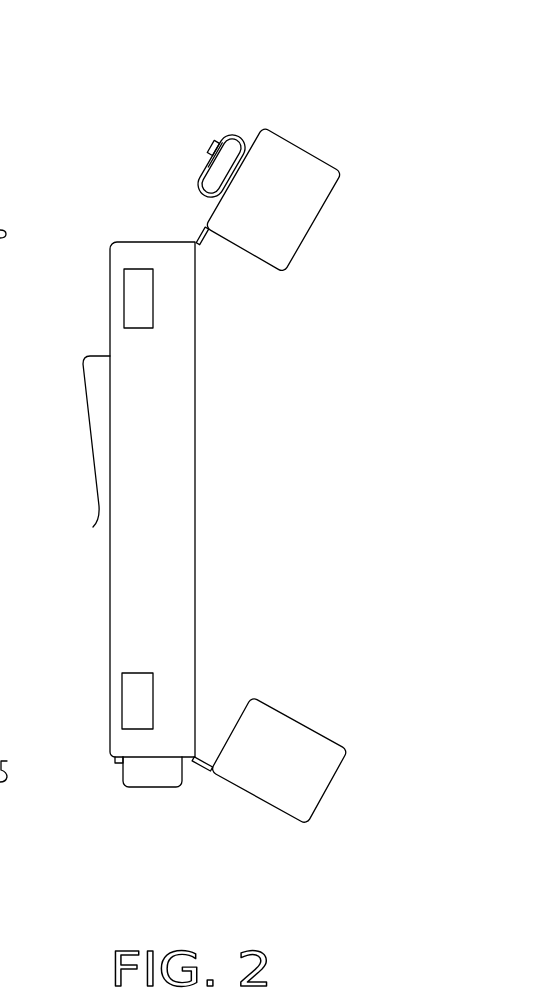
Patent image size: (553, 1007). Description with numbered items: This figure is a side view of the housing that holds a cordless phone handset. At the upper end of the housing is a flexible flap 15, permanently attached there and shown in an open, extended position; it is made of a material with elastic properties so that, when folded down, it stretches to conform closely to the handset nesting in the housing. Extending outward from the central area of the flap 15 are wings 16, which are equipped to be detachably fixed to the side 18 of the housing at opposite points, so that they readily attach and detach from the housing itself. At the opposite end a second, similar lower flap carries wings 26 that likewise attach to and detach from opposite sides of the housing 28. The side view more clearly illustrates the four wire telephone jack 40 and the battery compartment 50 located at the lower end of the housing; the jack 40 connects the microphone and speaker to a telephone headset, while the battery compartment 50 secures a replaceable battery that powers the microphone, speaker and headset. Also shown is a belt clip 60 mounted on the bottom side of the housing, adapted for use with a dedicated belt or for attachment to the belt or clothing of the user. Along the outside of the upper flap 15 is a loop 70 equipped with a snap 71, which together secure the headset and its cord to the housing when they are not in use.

The flexible flap 15 is at (258, 130).
The wings 16 is at (302, 203).
The side of the housing 18 is at (133, 295).
The wings 26 is at (262, 710).
The housing 28 is at (128, 697).
The four wire telephone jack 40 is at (115, 765).
The battery compartment 50 is at (158, 778).
The belt clip 60 is at (88, 423).
The loop 70 is at (196, 175).
The snap 71 is at (207, 140).